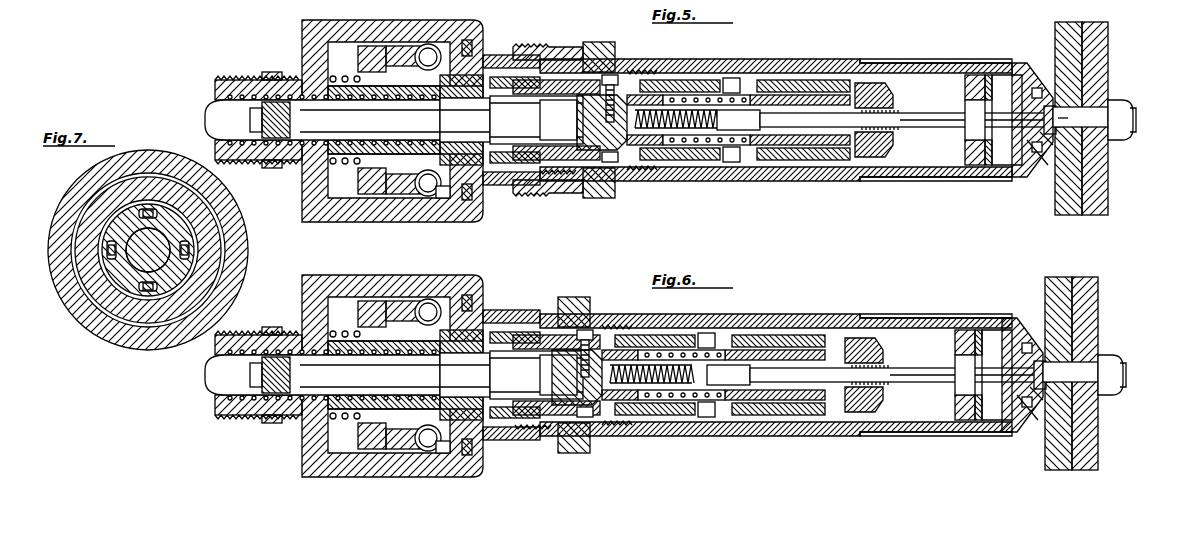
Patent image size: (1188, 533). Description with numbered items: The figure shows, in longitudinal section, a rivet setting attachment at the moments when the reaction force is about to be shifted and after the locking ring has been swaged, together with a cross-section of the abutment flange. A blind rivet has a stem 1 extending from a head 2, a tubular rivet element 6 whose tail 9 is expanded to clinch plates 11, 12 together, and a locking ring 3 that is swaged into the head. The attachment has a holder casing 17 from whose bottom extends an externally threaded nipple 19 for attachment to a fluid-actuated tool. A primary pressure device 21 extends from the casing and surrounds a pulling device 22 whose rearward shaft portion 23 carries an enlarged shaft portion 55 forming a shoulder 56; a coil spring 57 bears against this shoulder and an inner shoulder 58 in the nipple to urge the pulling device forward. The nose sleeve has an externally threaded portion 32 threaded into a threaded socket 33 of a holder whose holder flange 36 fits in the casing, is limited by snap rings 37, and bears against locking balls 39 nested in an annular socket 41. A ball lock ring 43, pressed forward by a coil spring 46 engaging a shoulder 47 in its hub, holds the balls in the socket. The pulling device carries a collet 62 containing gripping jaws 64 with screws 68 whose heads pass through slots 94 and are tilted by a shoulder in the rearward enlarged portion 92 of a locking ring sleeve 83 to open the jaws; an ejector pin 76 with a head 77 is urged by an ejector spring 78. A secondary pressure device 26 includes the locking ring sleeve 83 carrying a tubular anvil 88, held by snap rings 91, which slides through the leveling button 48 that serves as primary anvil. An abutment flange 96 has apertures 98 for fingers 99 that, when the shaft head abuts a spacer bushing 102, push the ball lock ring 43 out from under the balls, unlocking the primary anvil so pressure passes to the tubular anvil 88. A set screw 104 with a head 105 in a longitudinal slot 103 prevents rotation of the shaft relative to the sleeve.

In FIG. 5, the stem 1 is at (930, 118).
In FIG. 6, the stem 1 is at (920, 374).
In FIG. 5, the head 2 is at (1058, 140).
In FIG. 6, the head 2 is at (1040, 352).
In FIG. 5, the locking ring 3 is at (1068, 116).
In FIG. 5, the tubular rivet element 6 is at (1092, 110).
In FIG. 6, the tubular rivet element 6 is at (1075, 368).
In FIG. 5, the tail 9 is at (1126, 136).
In FIG. 6, the tail 9 is at (1112, 385).
In FIG. 5, the plate 11 is at (1108, 34).
In FIG. 6, the plate 11 is at (1098, 270).
In FIG. 5, the plate 12 is at (1055, 28).
In FIG. 6, the plate 12 is at (1045, 266).
In FIG. 5, the holder casing 17 is at (302, 34).
In FIG. 6, the holder casing 17 is at (408, 283).
In FIG. 7, the holder casing 17 is at (232, 222).
In FIG. 5, the externally threaded nipple 19 is at (250, 80).
In FIG. 5, the primary pressure device 21 is at (1020, 177).
In FIG. 6, the primary pressure device 21 is at (1003, 435).
In FIG. 5, the pulling device 22 is at (600, 150).
In FIG. 6, the pulling device 22 is at (585, 405).
In FIG. 5, the rearward shaft portion 23 is at (322, 120).
In FIG. 5, the secondary pressure device 26 is at (975, 80).
In FIG. 6, the secondary pressure device 26 is at (972, 340).
In FIG. 5, the externally threaded portion 32 is at (545, 47).
In FIG. 5, the threaded socket 33 is at (565, 52).
In FIG. 5, the holder flange 36 is at (400, 45).
In FIG. 6, the holder flange 36 is at (390, 300).
In FIG. 7, the holder flange 36 is at (218, 243).
In FIG. 5, the snap rings 37 is at (486, 188).
In FIG. 6, the snap rings 37 is at (486, 310).
In FIG. 5, the locking balls 39 is at (428, 190).
In FIG. 6, the locking balls 39 is at (426, 445).
In FIG. 5, the annular socket 41 is at (445, 198).
In FIG. 6, the annular socket 41 is at (440, 453).
In FIG. 5, the ball lock ring 43 is at (358, 182).
In FIG. 6, the ball lock ring 43 is at (358, 438).
In FIG. 5, the coil spring 46 is at (330, 162).
In FIG. 6, the coil spring 46 is at (330, 334).
In FIG. 5, the shoulder 47 is at (358, 60).
In FIG. 5, the leveling button 48 is at (1046, 95).
In FIG. 6, the leveling button 48 is at (1030, 400).
In FIG. 5, the enlarged shaft portion 55 is at (528, 116).
In FIG. 6, the enlarged shaft portion 55 is at (530, 380).
In FIG. 5, the shoulder 56 is at (445, 106).
In FIG. 6, the shoulder 56 is at (415, 367).
In FIG. 5, the coil spring 57 is at (372, 100).
In FIG. 6, the coil spring 57 is at (350, 355).
In FIG. 5, the inner shoulder 58 is at (262, 76).
In FIG. 5, the collet 62 is at (770, 161).
In FIG. 6, the collet 62 is at (745, 416).
In FIG. 5, the gripping jaws 64 is at (893, 100).
In FIG. 6, the gripping jaws 64 is at (883, 357).
In FIG. 5, the screws 68 is at (737, 78).
In FIG. 6, the screws 68 is at (712, 332).
In FIG. 5, the ejector pin 76 is at (815, 95).
In FIG. 6, the ejector pin 76 is at (812, 380).
In FIG. 5, the head 77 is at (705, 130).
In FIG. 6, the head 77 is at (685, 365).
In FIG. 5, the ejector spring 78 is at (640, 150).
In FIG. 5, the locking ring sleeve 83 is at (882, 64).
In FIG. 6, the locking ring sleeve 83 is at (860, 322).
In FIG. 5, the tubular anvil 88 is at (1010, 135).
In FIG. 6, the tubular anvil 88 is at (1040, 388).
In FIG. 5, the snap rings 91 is at (992, 78).
In FIG. 5, the rearward enlarged portion 92 is at (556, 182).
In FIG. 6, the rearward enlarged portion 92 is at (528, 437).
In FIG. 6, the slots 94 is at (685, 405).
In FIG. 7, the abutment flange 96 is at (170, 274).
In FIG. 7, the apertures 98 is at (118, 195).
In FIG. 7, the fingers 99 is at (190, 244).
In FIG. 5, the spacer bushing 102 is at (556, 120).
In FIG. 6, the spacer bushing 102 is at (538, 375).
In FIG. 5, the longitudinal slot 103 is at (667, 73).
In FIG. 6, the longitudinal slot 103 is at (608, 326).
In FIG. 5, the set screw 104 is at (578, 100).
In FIG. 5, the head 105 is at (615, 74).
In FIG. 6, the head 105 is at (588, 328).